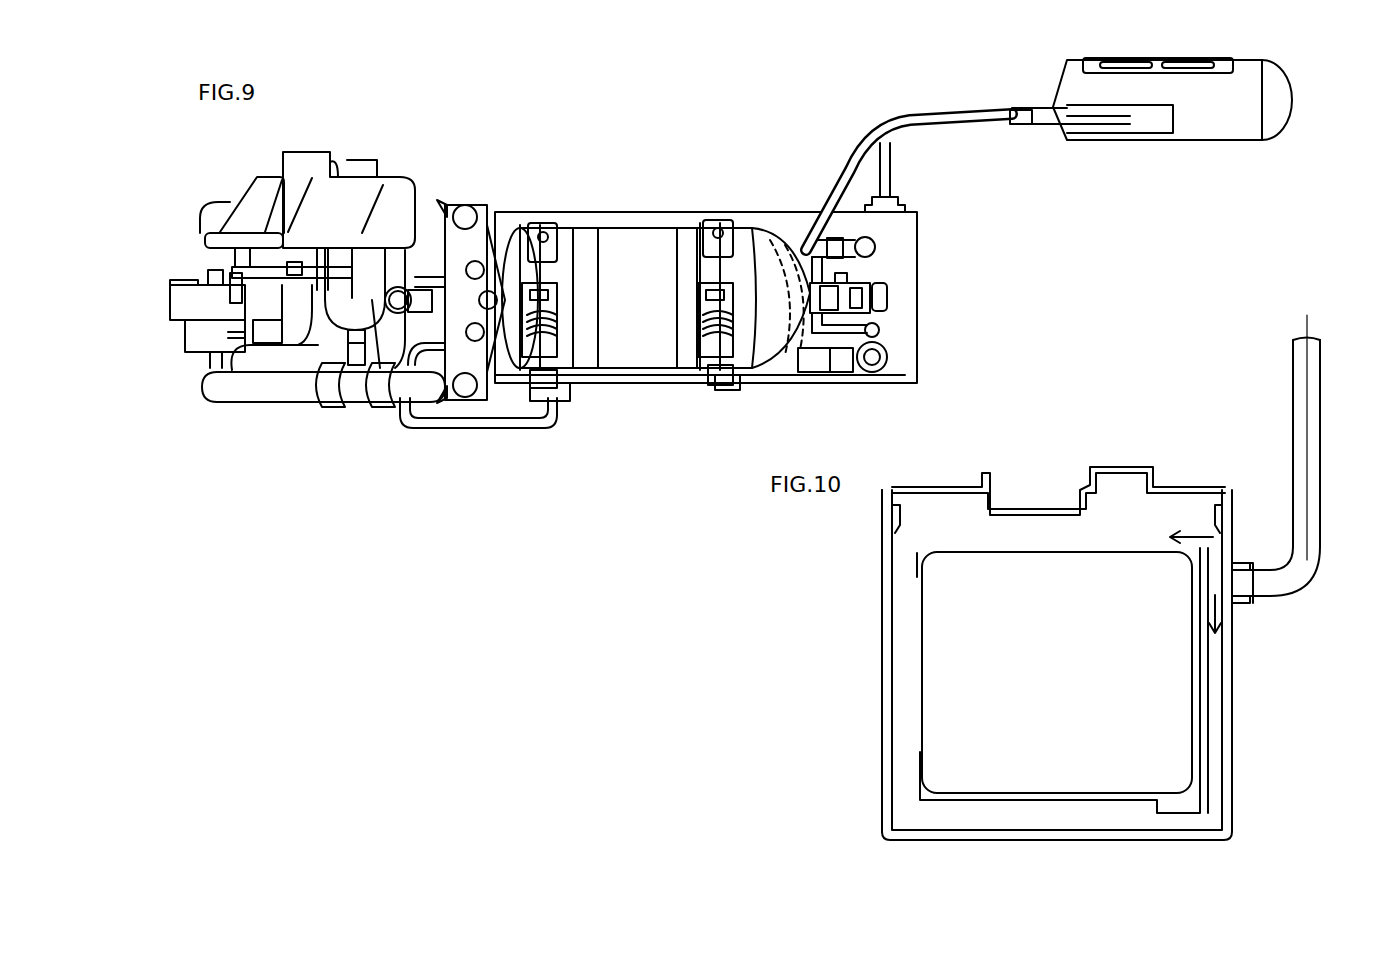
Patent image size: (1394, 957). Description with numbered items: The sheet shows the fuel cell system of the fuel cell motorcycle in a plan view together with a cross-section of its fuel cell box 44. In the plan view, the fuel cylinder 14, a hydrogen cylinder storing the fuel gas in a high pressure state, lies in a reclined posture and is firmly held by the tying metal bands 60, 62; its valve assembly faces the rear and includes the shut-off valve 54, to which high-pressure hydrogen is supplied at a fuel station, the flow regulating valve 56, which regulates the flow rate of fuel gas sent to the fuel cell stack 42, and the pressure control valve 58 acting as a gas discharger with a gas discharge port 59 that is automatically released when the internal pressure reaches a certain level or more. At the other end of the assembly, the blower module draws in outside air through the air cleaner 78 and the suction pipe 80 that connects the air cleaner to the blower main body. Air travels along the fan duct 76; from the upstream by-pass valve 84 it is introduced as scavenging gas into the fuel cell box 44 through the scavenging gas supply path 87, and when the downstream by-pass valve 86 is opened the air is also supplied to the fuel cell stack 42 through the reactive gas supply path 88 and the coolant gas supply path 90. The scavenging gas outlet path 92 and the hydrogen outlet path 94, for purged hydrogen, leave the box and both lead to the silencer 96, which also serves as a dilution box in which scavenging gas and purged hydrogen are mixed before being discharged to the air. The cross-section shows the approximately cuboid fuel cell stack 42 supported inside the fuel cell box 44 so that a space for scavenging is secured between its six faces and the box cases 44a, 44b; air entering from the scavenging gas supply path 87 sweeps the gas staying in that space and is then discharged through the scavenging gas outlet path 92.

In FIG. 9, the fuel cylinder 14 is at (640, 240).
In FIG. 10, the fuel cell stack 42 is at (1040, 778).
In FIG. 9, the fuel cell box 44 is at (907, 353).
In FIG. 10, the fuel cell box 44 is at (1233, 695).
In FIG. 10, the box case 44a is at (885, 718).
In FIG. 10, the box case 44b is at (942, 485).
In FIG. 9, the shut-off valve 54 is at (888, 298).
In FIG. 9, the flow regulating valve 56 is at (867, 315).
In FIG. 9, the pressure control valve 58 is at (848, 278).
In FIG. 9, the gas discharge port 59 is at (830, 255).
In FIG. 9, the tying metal band 60 is at (717, 223).
In FIG. 9, the tying metal band 62 is at (540, 225).
In FIG. 9, the fan duct 76 is at (245, 360).
In FIG. 9, the air cleaner 78 is at (400, 183).
In FIG. 9, the suction pipe 80 is at (338, 312).
In FIG. 9, the upstream by-pass valve 84 is at (387, 405).
In FIG. 9, the downstream by-pass valve 86 is at (722, 377).
In FIG. 9, the scavenging gas supply path 87 is at (473, 428).
In FIG. 10, the scavenging gas supply path 87 is at (1315, 492).
In FIG. 9, the reactive gas supply path 88 is at (773, 360).
In FIG. 9, the coolant gas supply path 90 is at (807, 363).
In FIG. 9, the scavenging gas outlet path 92 is at (887, 175).
In FIG. 9, the hydrogen outlet path 94 is at (940, 128).
In FIG. 9, the silencer 96 is at (1190, 130).